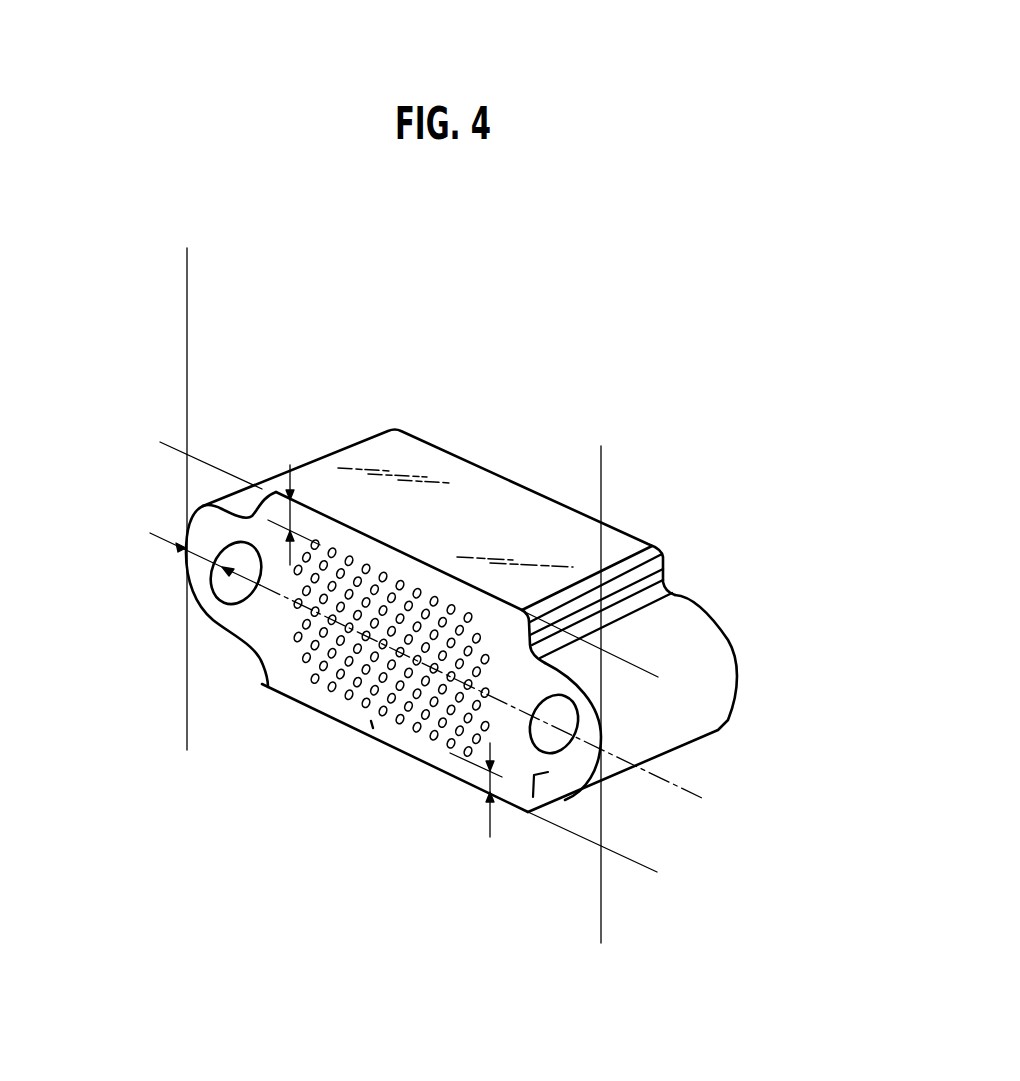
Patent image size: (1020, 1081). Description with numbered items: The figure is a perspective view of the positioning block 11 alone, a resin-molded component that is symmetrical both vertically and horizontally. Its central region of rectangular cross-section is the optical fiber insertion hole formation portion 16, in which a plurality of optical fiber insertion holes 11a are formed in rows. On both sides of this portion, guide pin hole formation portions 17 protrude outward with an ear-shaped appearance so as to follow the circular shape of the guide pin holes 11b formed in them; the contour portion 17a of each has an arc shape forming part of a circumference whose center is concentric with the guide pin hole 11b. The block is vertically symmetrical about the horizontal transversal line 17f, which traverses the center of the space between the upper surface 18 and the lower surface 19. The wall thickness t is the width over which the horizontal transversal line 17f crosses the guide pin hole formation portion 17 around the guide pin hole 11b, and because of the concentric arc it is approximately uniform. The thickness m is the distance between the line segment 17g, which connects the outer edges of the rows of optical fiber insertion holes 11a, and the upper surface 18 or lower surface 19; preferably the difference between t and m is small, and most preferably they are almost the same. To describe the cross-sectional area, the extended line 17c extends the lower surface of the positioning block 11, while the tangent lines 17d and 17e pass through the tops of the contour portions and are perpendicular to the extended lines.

The positioning block 11 is at (428, 841).
The optical fiber insertion holes 11a is at (347, 703).
The guide pin holes 11b is at (232, 588).
The optical fiber insertion hole formation portion 16 is at (393, 733).
The guide pin hole formation portions 17 is at (230, 628).
The contour portion 17a is at (188, 548).
The extended line of the lower surface 17c is at (637, 868).
The tangent line 17d is at (602, 500).
The tangent line 17e is at (187, 355).
The horizontal transversal line 17f is at (677, 797).
The line segment 17g is at (317, 521).
The upper surface 18 is at (385, 443).
The lower surface 19 is at (370, 737).
The wall thickness t is at (160, 521).
The thickness m is at (379, 652).